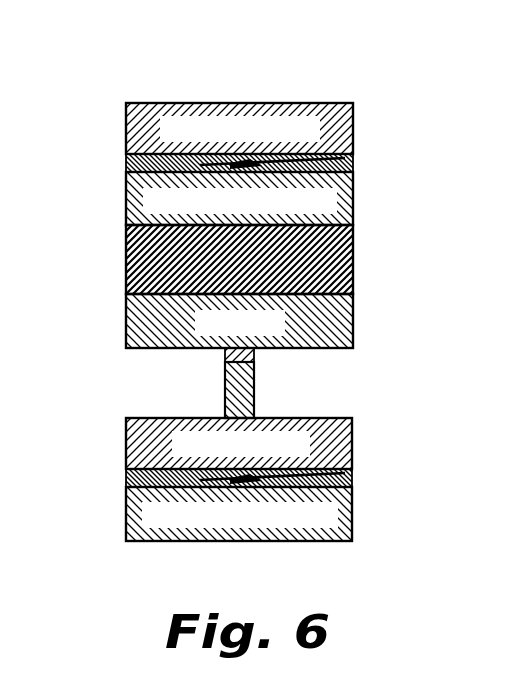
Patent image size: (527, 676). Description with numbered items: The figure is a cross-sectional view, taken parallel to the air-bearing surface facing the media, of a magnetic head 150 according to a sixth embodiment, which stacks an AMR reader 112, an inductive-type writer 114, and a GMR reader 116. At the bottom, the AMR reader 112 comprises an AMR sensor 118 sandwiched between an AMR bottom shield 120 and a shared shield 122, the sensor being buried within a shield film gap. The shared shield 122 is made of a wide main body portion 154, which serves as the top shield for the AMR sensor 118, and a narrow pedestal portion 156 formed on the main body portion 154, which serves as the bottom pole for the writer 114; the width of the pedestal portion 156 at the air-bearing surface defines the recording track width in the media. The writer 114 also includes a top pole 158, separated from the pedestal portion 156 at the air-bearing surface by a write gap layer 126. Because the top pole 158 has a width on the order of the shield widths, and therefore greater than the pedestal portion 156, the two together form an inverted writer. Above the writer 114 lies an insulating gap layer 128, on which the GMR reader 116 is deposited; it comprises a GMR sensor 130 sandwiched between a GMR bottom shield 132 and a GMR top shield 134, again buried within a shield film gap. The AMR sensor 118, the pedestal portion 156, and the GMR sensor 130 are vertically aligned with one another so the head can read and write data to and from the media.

The magnetic head 150 is at (304, 73).
The GMR reader 116 is at (60, 103).
The GMR top shield 134 is at (353, 122).
The GMR sensor 130 is at (353, 150).
The GMR bottom shield 132 is at (353, 200).
The insulating gap layer 128 is at (353, 259).
The top pole 158 is at (353, 319).
The writer 114 is at (83, 298).
The write gap layer 126 is at (256, 355).
The pedestal portion 156 is at (254, 400).
The shared shield 122 is at (397, 352).
The AMR reader 112 is at (103, 418).
The main body portion 154 is at (338, 418).
The AMR sensor 118 is at (352, 492).
The AMR bottom shield 120 is at (352, 515).